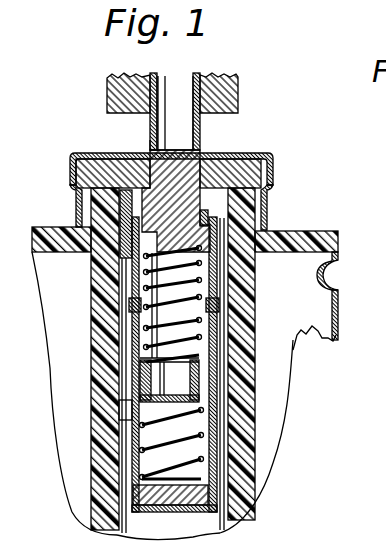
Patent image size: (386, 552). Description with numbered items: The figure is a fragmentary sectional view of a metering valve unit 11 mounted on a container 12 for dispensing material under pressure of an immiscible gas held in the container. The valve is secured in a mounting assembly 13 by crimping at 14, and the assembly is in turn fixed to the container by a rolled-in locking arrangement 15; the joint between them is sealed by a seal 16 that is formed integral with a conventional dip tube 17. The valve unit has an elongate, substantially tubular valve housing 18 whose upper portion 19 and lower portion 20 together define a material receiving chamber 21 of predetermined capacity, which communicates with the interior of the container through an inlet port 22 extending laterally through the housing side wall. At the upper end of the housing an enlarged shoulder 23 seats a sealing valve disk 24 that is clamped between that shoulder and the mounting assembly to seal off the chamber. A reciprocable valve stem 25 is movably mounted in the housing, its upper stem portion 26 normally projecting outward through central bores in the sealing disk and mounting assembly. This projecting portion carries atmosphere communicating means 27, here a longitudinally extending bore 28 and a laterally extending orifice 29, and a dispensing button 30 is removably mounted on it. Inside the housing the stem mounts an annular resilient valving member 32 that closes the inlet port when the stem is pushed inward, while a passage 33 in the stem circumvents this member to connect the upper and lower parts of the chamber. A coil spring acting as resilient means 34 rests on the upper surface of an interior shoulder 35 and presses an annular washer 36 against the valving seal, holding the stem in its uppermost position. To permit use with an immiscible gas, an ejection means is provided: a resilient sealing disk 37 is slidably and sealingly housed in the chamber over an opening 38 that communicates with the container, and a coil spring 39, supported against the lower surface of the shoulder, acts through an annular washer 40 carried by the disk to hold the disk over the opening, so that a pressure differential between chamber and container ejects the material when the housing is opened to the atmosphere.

The metering valve unit 11 is at (207, 146).
The container 12 is at (340, 313).
The mounting assembly 13 is at (266, 212).
The crimping 14 is at (72, 194).
The rolled-in locking arrangement 15 is at (333, 272).
The seal 16 is at (318, 232).
The dip tube 17 is at (246, 424).
The valve housing 18 is at (224, 382).
The upper portion 19 is at (215, 281).
The lower portion 20 is at (130, 410).
The material receiving chamber 21 is at (203, 446).
The inlet port 22 is at (132, 250).
The shoulder 23 is at (268, 188).
The sealing valve disk 24 is at (271, 167).
The valve stem 25 is at (150, 118).
The upper stem portion 26 is at (158, 127).
The atmosphere communicating means 27 is at (198, 74).
The longitudinally extending bore 28 is at (176, 104).
The laterally extending orifice 29 is at (152, 148).
The dispensing button 30 is at (226, 90).
The valving member 32 is at (128, 226).
The passage 33 is at (128, 262).
The resilient means 34 is at (215, 328).
The shoulder 35 is at (148, 364).
The annular washer 36 is at (211, 252).
The sealing disk 37 is at (214, 502).
The opening 38 is at (225, 536).
The coil spring 39 is at (143, 447).
The annular washer 40 is at (213, 485).